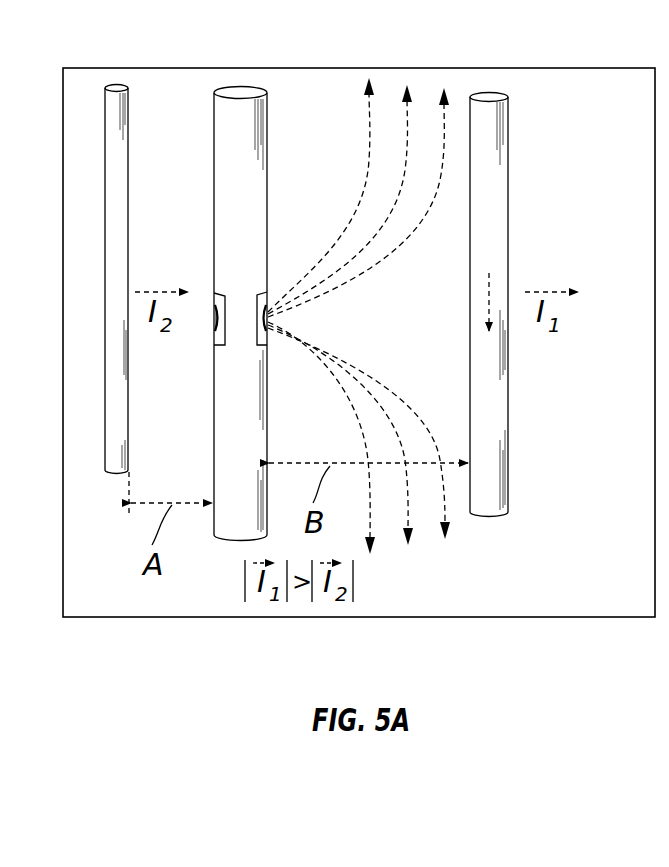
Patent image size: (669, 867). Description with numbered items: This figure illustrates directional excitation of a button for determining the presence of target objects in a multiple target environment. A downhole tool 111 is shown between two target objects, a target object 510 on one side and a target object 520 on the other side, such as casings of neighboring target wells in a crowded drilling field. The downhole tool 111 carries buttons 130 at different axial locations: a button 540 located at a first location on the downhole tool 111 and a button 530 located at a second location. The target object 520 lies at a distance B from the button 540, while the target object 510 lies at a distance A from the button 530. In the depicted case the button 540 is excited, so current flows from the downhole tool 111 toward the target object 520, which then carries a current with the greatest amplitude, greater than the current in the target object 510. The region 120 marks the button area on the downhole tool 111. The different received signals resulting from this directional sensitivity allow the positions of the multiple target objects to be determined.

The target object 510 is at (115, 88).
The downhole tool 111 is at (241, 93).
The target object 520 is at (488, 96).
The sensor cavity 120 is at (213, 299).
The button 130 is at (215, 316).
The button 530 is at (221, 339).
The button 540 is at (263, 339).